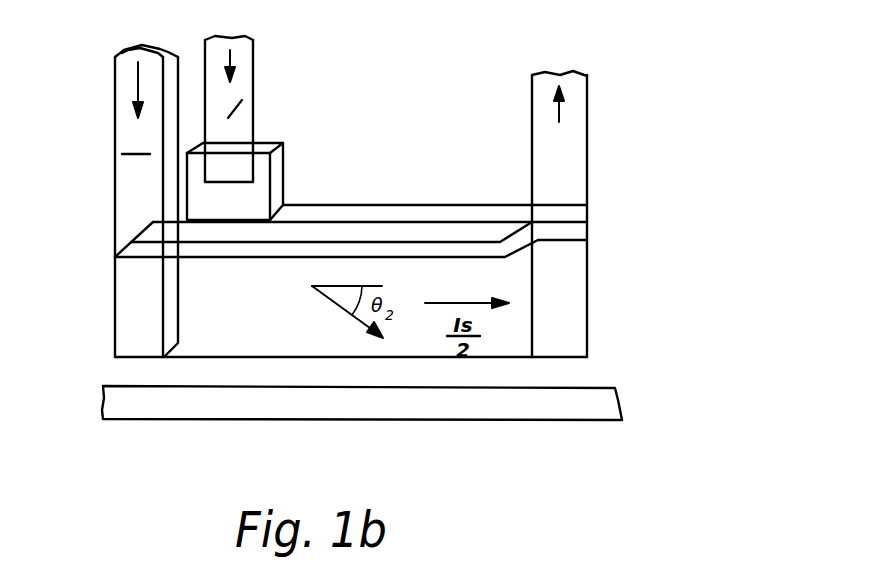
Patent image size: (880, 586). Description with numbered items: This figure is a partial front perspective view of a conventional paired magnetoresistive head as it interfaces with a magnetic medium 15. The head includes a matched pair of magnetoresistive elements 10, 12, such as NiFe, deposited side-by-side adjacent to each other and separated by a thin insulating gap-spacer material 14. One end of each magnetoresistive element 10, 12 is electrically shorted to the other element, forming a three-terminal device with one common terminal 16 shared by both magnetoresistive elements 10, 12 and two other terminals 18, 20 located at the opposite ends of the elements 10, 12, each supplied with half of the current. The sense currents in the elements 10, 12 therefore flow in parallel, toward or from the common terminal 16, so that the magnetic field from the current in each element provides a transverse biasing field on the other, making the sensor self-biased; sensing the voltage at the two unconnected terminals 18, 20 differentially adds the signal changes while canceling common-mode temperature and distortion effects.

The magnetoresistive element 10 is at (455, 210).
The magnetoresistive element 12 is at (337, 248).
The gap-spacer material 14 is at (268, 230).
The magnetic medium 15 is at (178, 409).
The common terminal 16 is at (578, 164).
The terminal 18 is at (272, 142).
The terminal 20 is at (125, 224).